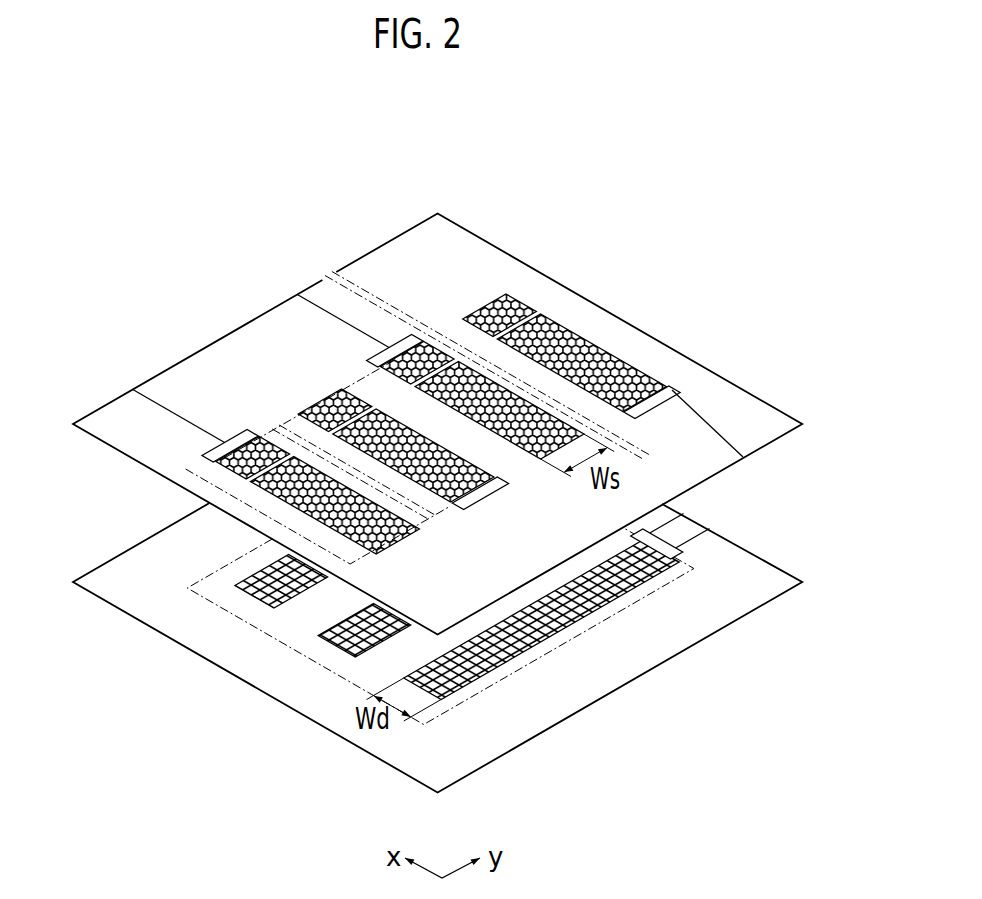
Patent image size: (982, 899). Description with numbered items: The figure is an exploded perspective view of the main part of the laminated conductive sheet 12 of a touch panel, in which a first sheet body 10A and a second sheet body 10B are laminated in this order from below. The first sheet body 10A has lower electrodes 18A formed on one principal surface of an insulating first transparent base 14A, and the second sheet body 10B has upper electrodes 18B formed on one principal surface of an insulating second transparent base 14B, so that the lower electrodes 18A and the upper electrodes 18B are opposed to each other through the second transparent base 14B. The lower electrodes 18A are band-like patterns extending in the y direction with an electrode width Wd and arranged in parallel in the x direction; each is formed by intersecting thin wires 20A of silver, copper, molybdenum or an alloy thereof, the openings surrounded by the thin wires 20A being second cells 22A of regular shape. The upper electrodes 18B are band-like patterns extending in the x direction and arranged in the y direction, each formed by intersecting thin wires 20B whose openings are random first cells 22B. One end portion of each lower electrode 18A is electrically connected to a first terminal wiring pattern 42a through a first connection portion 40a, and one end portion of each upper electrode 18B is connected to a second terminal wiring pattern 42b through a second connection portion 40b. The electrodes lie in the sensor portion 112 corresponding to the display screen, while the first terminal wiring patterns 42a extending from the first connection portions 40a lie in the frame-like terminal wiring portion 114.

The first sheet body 10A is at (655, 668).
The second sheet body 10B is at (737, 386).
The laminated conductive sheet 12 is at (634, 219).
The first transparent base 14A is at (110, 560).
The second transparent base 14B is at (109, 403).
The lower electrode 18A is at (242, 593).
The upper electrode 18B is at (648, 378).
The thin wire 20A is at (557, 634).
The thin wire 20B is at (592, 424).
The second cell 22A is at (477, 672).
The first cell 22B is at (300, 410).
The first connection portion 40a is at (663, 533).
The second connection portion 40b is at (215, 449).
The first terminal wiring pattern 42a is at (705, 549).
The second terminal wiring pattern 42b is at (160, 408).
The sensor portion 112 is at (198, 477).
The terminal wiring portion 114 is at (250, 338).